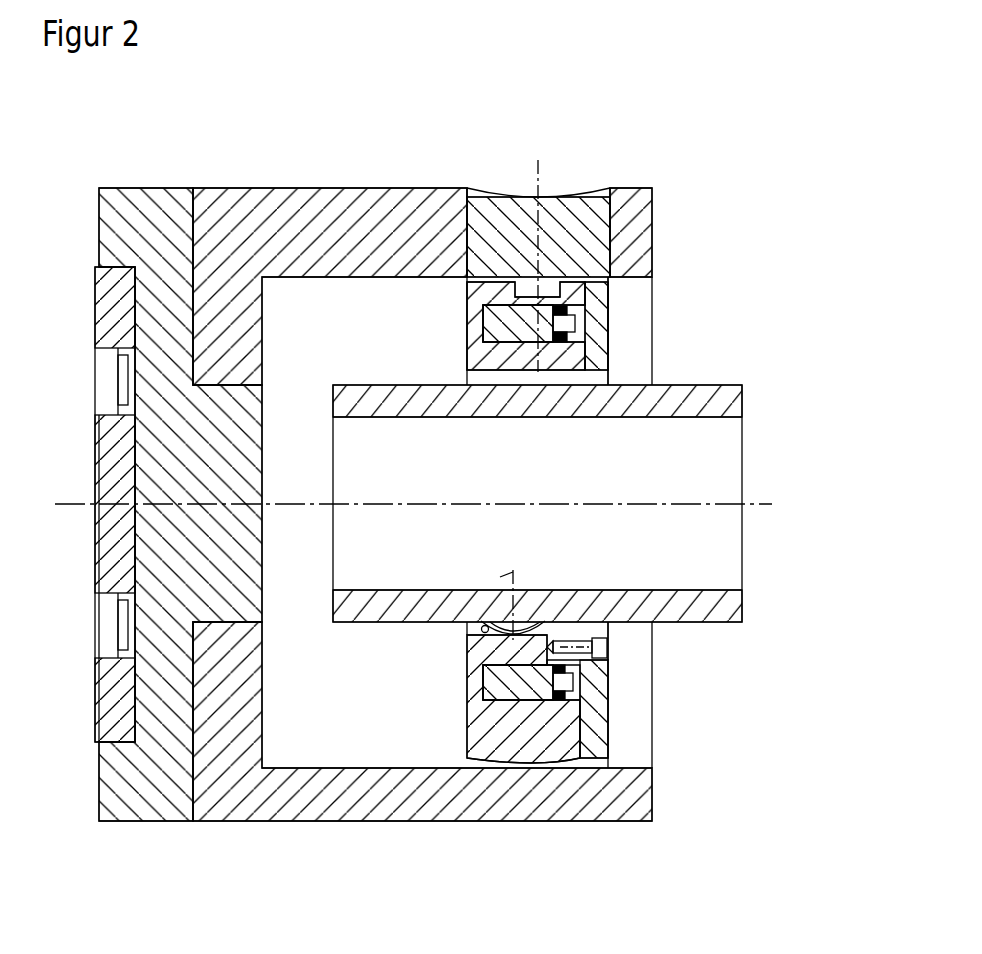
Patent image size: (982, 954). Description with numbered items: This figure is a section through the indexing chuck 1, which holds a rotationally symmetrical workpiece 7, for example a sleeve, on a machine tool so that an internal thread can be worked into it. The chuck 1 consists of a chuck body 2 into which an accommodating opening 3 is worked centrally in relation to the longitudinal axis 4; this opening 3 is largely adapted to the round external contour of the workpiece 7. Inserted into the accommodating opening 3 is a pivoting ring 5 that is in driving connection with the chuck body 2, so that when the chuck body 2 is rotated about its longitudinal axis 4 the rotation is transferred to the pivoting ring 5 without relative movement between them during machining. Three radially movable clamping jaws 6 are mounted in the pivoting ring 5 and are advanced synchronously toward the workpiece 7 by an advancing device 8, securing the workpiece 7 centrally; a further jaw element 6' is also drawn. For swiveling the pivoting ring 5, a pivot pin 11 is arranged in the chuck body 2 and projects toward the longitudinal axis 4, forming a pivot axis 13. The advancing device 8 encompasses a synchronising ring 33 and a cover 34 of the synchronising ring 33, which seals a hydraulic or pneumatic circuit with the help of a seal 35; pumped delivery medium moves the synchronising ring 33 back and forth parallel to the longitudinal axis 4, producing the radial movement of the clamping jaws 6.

The indexing chuck 1 is at (672, 117).
The chuck body 2 is at (292, 798).
The accommodating opening 3 is at (637, 767).
The longitudinal axis 4 is at (758, 503).
The pivoting ring 5 is at (619, 739).
The clamping jaw 6 is at (472, 783).
The retaining spring element 6' is at (416, 752).
The workpiece 7 is at (705, 607).
The advancing device 8 is at (577, 317).
The pivot pin 11 is at (500, 215).
The pivot axis 13 is at (540, 177).
The synchronising ring 33 is at (503, 330).
The cover 34 is at (572, 327).
The seal 35 is at (583, 301).